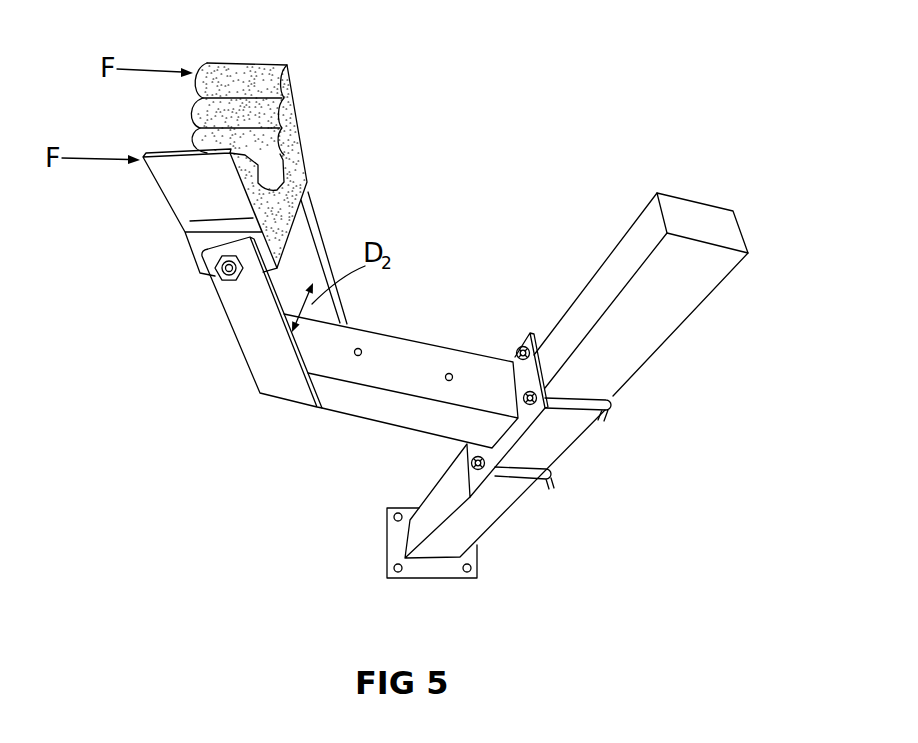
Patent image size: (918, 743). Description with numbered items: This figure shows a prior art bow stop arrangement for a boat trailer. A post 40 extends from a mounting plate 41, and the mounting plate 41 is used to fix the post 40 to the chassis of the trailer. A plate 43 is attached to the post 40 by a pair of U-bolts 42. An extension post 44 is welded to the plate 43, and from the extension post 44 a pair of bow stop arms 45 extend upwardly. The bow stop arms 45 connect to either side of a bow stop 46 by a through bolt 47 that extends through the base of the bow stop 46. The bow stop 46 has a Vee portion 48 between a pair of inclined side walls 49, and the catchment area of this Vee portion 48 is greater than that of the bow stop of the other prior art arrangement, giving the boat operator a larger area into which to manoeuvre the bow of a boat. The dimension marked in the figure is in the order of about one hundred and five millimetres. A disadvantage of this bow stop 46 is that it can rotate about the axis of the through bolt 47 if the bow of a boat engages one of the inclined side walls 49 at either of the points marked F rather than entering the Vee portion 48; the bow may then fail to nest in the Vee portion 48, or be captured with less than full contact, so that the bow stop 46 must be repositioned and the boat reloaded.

The post 40 is at (628, 250).
The mounting plate 41 is at (433, 578).
The U-bolts 42 is at (602, 420).
The plate 43 is at (525, 332).
The extension post 44 is at (377, 347).
The bow stop arms 45 is at (312, 247).
The bow stop 46 is at (293, 178).
The through bolt 47 is at (228, 284).
The Vee portion 48 is at (177, 128).
The inclined side walls 49 is at (285, 83).